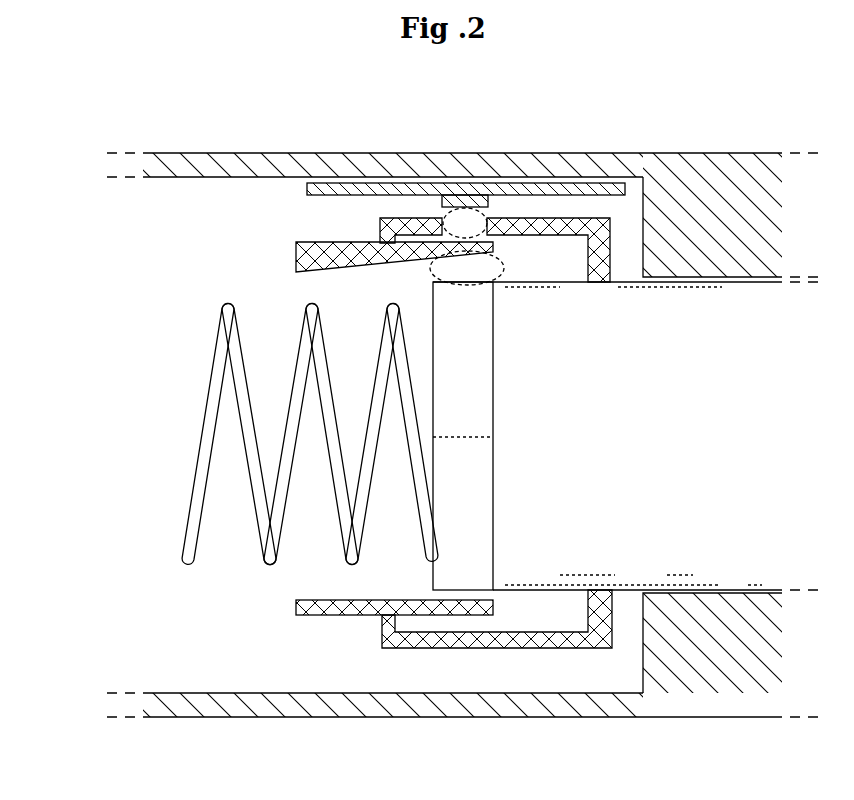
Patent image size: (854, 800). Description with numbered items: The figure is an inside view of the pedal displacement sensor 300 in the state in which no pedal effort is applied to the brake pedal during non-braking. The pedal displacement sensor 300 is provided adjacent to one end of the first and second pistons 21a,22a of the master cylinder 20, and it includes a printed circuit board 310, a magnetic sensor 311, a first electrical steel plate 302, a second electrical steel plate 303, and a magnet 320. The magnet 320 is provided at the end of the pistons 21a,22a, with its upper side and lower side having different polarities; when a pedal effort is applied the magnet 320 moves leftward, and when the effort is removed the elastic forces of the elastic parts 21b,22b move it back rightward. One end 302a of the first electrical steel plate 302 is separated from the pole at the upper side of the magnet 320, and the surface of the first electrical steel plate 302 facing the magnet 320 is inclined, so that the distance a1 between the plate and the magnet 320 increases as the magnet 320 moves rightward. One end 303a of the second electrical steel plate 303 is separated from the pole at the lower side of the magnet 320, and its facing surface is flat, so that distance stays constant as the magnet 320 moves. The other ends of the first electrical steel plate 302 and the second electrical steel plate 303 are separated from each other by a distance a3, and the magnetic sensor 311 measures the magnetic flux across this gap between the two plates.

The master cylinder 20 is at (673, 702).
The first piston and second piston 21a,22a is at (708, 300).
The elastic parts 21b,22b is at (222, 353).
The pedal displacement sensor 300 is at (638, 180).
The first electrical steel plate 302 is at (380, 225).
The one end of the first electrical steel plate 302a is at (305, 257).
The second electrical steel plate 303 is at (558, 648).
The one end of the second electrical steel plate 303a is at (320, 615).
The printed circuit board 310 is at (392, 187).
The magnetic sensor 311 is at (467, 202).
The magnet 320 is at (450, 472).
The distance between the first electrical steel plate and the magnet a1 is at (502, 262).
The distance between the other ends of the electrical steel plates a3 is at (485, 228).